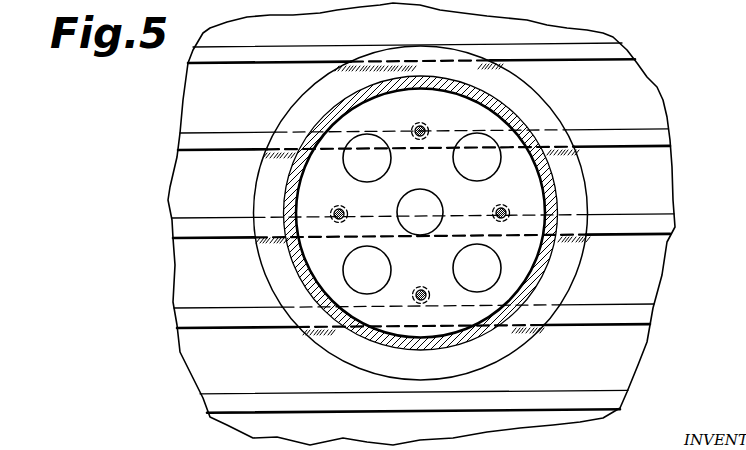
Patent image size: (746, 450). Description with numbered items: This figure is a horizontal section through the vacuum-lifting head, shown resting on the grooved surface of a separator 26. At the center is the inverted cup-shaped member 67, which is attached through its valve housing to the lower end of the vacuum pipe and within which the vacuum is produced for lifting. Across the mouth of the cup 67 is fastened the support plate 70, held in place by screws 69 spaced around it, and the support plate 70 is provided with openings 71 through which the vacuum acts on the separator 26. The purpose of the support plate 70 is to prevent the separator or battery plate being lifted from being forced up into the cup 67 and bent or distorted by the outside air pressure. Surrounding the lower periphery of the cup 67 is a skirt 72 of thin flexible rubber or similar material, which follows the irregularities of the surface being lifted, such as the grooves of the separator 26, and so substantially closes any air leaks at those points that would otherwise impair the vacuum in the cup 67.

The separator 26 is at (658, 81).
The skirt 72 is at (537, 100).
The inverted cup-shaped member 67 is at (552, 258).
The support plate 70 is at (443, 100).
The openings 71 is at (462, 158).
The screws 69 is at (413, 127).